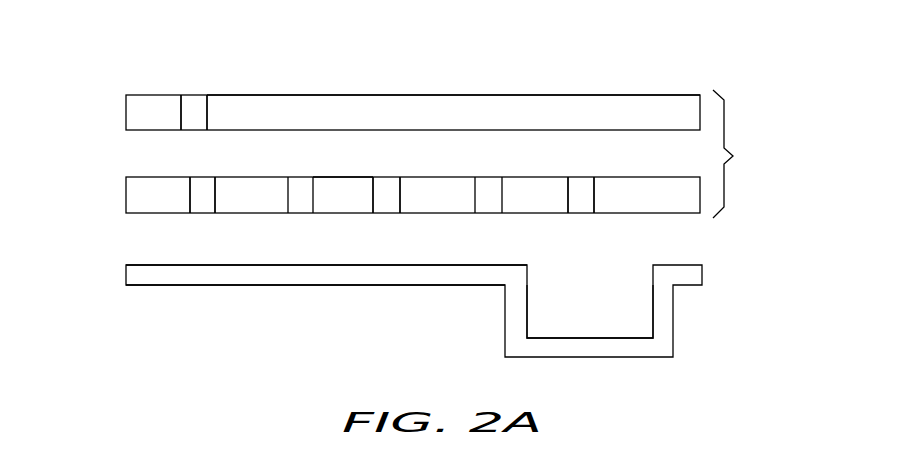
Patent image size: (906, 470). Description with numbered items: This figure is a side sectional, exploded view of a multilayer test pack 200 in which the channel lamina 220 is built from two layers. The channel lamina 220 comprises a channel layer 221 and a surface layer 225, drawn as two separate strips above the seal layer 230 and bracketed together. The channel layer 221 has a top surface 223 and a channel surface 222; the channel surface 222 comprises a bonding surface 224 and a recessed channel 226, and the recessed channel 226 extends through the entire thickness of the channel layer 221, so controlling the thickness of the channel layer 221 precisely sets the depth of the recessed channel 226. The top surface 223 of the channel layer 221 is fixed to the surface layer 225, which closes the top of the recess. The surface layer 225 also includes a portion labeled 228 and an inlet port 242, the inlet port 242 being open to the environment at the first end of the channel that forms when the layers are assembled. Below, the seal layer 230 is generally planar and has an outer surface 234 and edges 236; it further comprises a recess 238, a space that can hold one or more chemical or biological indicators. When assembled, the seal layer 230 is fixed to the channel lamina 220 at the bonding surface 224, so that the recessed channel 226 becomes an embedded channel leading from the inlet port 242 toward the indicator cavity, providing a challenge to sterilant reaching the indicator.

The multilayer test pack 200 is at (630, 35).
The channel lamina 220 is at (747, 154).
The channel layer 221 is at (137, 195).
The channel surface 222 is at (233, 216).
The top surface 223 is at (359, 178).
The bonding surface 224 is at (362, 213).
The surface layer 225 is at (137, 113).
The recessed channel 226 is at (582, 200).
The segment 228 is at (397, 93).
The seal layer 230 is at (460, 292).
The outer surface 234 is at (302, 288).
The edges 236 is at (137, 273).
The recess 238 is at (572, 302).
The inlet port 242 is at (197, 117).